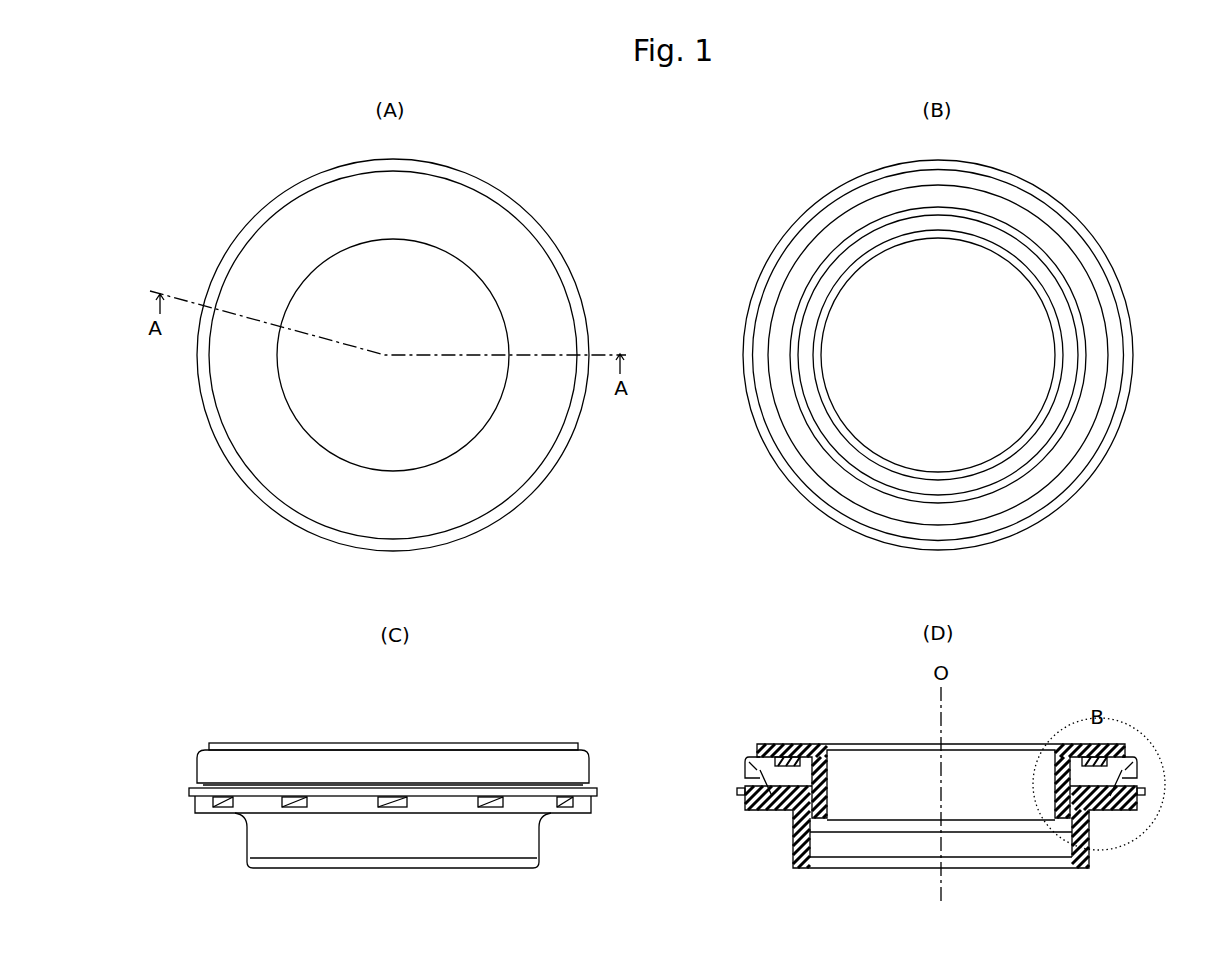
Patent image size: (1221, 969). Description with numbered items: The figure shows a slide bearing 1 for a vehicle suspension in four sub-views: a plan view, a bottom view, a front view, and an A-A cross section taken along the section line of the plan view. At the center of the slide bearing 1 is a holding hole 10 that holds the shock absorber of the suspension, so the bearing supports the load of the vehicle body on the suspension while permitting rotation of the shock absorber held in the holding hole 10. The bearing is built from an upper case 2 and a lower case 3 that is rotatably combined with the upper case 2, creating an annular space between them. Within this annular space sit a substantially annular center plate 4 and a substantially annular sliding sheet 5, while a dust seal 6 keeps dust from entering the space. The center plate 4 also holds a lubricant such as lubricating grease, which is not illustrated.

The slide bearing 1 is at (689, 519).
The upper case 2 is at (665, 471).
The lower case 3 is at (663, 524).
The center plate 4 is at (936, 812).
The sliding sheet 5 is at (942, 722).
The dust seal 6 is at (940, 773).
The holding hole 10 is at (708, 478).